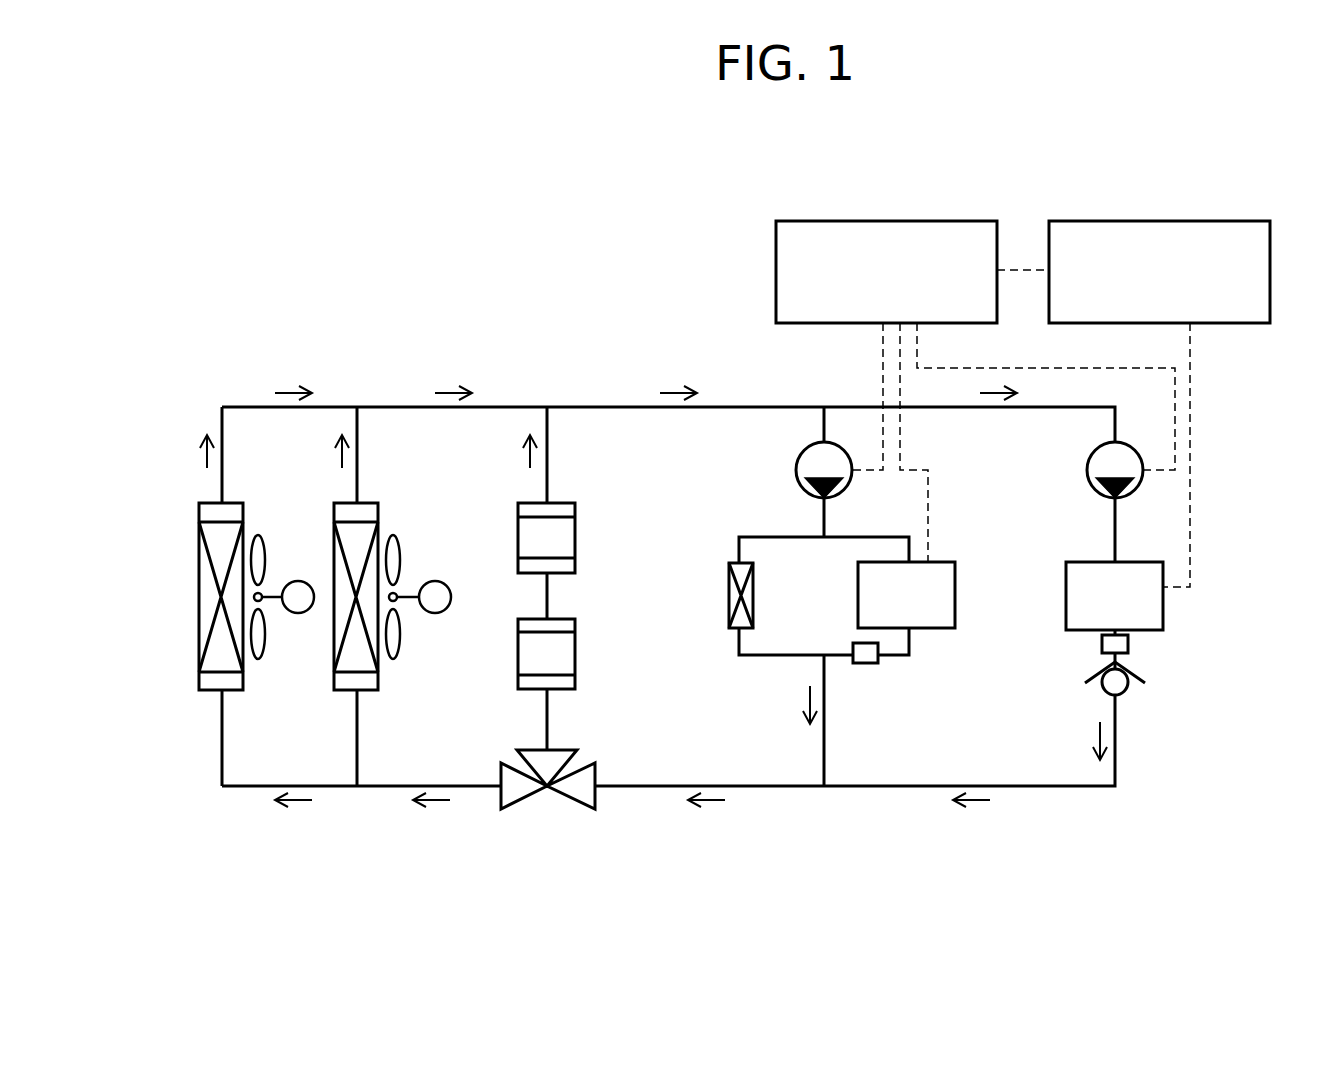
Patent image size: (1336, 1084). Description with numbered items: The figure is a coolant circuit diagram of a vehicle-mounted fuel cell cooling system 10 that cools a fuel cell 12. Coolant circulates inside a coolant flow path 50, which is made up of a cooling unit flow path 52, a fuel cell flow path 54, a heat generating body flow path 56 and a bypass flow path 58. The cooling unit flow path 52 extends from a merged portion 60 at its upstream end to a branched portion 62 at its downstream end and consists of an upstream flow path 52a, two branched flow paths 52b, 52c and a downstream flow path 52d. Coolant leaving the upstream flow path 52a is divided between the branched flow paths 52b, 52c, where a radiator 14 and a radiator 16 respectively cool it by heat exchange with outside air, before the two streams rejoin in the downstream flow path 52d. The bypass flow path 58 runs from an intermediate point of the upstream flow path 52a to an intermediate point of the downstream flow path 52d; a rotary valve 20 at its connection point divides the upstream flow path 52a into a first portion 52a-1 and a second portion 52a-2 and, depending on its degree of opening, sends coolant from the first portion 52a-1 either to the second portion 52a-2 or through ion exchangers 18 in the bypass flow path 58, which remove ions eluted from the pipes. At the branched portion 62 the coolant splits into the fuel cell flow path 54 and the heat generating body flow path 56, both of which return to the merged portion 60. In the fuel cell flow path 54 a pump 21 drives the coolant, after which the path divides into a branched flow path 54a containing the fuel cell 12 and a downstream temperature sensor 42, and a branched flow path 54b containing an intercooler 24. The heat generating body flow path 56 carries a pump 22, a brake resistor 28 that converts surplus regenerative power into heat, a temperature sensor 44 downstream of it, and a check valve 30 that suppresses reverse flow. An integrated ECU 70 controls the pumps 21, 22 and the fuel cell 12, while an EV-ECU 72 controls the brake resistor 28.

The fuel cell cooling system 10 is at (178, 188).
The fuel cell 12 is at (957, 594).
The radiator 14 is at (230, 503).
The radiator 16 is at (365, 503).
The ion exchangers 18 is at (575, 652).
The rotary valve 20 is at (527, 752).
The pump 21 is at (797, 465).
The pump 22 is at (1087, 470).
The intercooler 24 is at (729, 594).
The brake resistor 28 is at (1066, 594).
The check valve 30 is at (1122, 665).
The temperature sensor 42 is at (867, 663).
The temperature sensor 44 is at (1128, 645).
The coolant flow path 50 is at (575, 262).
The cooling unit flow path 52 is at (707, 407).
The upstream flow path 52a is at (650, 910).
The first portion 52a-1 is at (638, 790).
The second portion 52a-2 is at (475, 790).
The branched flow path 52b is at (220, 773).
The branched flow path 52c is at (355, 773).
The downstream flow path 52d is at (570, 407).
The fuel cell flow path 54 is at (753, 407).
The branched flow path 54a is at (867, 537).
The branched flow path 54b is at (765, 537).
The heat generating body flow path 56 is at (840, 405).
The bypass flow path 58 is at (548, 440).
The merged portion 60 is at (824, 790).
The branched portion 62 is at (822, 428).
The integrated ECU 70 is at (948, 221).
The EV-ECU 72 is at (1225, 221).